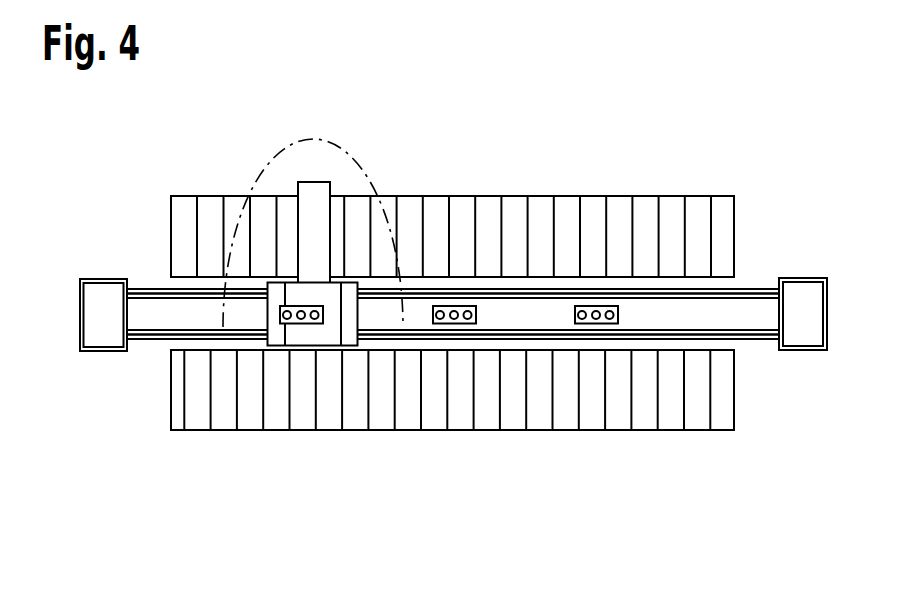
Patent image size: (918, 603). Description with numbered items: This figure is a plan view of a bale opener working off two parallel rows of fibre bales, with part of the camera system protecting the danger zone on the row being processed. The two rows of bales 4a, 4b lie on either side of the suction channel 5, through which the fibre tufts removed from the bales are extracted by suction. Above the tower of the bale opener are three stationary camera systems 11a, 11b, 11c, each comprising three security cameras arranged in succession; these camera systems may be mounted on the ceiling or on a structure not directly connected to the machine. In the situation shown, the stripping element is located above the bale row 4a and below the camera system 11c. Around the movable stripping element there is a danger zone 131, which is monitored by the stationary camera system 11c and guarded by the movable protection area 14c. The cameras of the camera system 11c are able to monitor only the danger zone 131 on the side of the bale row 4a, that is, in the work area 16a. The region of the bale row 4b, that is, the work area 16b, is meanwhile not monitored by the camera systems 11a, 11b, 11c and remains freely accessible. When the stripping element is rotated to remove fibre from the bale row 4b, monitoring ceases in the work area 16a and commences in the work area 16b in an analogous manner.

The row of bales 4a is at (452, 195).
The row of bales 4b is at (496, 464).
The suction channel 5 is at (153, 343).
The camera system 11a is at (592, 322).
The camera system 11b is at (447, 323).
The camera system 11c is at (295, 322).
The danger zone 131 is at (353, 177).
The movable protection area 14c is at (312, 188).
The work area 16a is at (488, 217).
The work area 16b is at (519, 414).